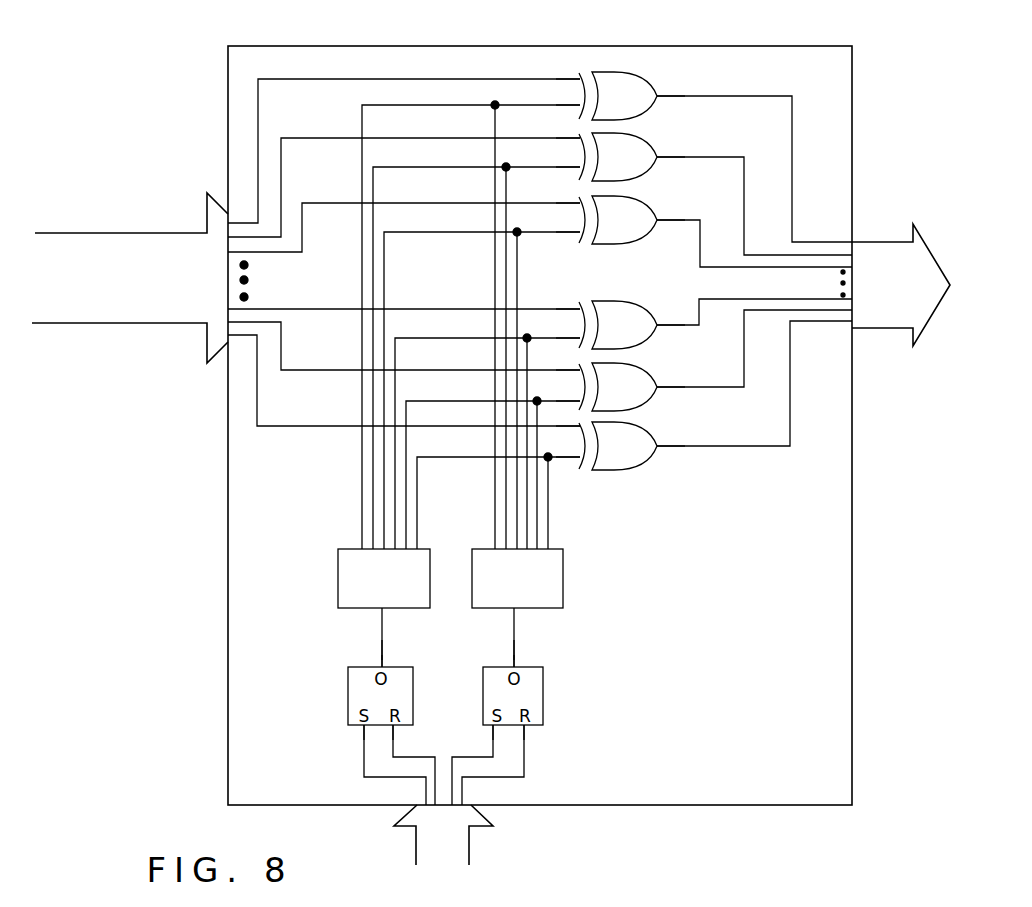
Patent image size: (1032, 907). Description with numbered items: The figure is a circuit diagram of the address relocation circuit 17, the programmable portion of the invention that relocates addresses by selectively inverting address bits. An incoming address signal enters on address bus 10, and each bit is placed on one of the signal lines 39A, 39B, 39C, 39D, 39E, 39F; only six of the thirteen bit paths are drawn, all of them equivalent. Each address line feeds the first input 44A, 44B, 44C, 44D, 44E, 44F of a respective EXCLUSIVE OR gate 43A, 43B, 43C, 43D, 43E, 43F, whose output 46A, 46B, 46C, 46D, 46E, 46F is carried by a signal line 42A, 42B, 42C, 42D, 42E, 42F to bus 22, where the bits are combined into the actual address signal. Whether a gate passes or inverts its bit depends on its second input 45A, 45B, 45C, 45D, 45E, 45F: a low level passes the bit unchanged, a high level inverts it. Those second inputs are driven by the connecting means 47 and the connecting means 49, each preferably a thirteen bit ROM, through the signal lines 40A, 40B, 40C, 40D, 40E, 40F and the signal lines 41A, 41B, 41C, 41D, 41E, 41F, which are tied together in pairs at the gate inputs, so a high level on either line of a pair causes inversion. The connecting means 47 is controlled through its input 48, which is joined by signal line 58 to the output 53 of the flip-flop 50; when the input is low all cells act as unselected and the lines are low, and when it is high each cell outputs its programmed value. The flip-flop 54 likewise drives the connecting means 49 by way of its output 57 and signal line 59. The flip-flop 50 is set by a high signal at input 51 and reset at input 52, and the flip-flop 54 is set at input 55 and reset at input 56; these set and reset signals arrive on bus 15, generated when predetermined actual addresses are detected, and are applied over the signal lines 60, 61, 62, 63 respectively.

The address bus 10 is at (118, 233).
The bus 15 is at (470, 858).
The address relocation circuit 17 is at (603, 46).
The bus 22 is at (872, 242).
The signal line 39A is at (325, 79).
The signal line 39B is at (333, 138).
The signal line 39C is at (352, 203).
The signal line 39D is at (342, 309).
The signal line 39E is at (338, 370).
The signal line 39F is at (322, 426).
The signal line 40A is at (366, 130).
The signal line 40B is at (376, 195).
The signal line 40C is at (388, 270).
The signal line 40D is at (397, 360).
The signal line 40E is at (407, 396).
The signal line 40F is at (418, 500).
The signal line 41A is at (494, 115).
The signal line 41B is at (507, 192).
The signal line 41C is at (518, 266).
The signal line 41D is at (528, 345).
The signal line 41E is at (538, 408).
The signal line 41F is at (549, 522).
The signal line 42A is at (740, 93).
The signal line 42B is at (738, 157).
The signal line 42C is at (703, 230).
The signal line 42D is at (702, 308).
The signal line 42E is at (744, 388).
The signal line 42F is at (784, 446).
The EXCLUSIVE OR gate 43A is at (648, 80).
The EXCLUSIVE OR gate 43B is at (650, 147).
The EXCLUSIVE OR gate 43C is at (650, 211).
The EXCLUSIVE OR gate 43D is at (650, 313).
The EXCLUSIVE OR gate 43E is at (658, 378).
The EXCLUSIVE OR gate 43F is at (658, 437).
The input 44A is at (578, 78).
The input 44B is at (578, 137).
The input 44C is at (576, 203).
The input 44D is at (578, 309).
The input 44E is at (581, 373).
The input 44F is at (581, 428).
The input 45A is at (578, 104).
The input 45B is at (578, 166).
The input 45C is at (576, 236).
The input 45D is at (578, 337).
The input 45E is at (580, 402).
The input 45F is at (579, 460).
The output 46A is at (660, 98).
The output 46B is at (660, 159).
The output 46C is at (650, 228).
The output 46D is at (652, 333).
The output 46E is at (660, 392).
The output 46F is at (656, 452).
The connecting means 47 is at (338, 580).
The input 48 is at (381, 612).
The connecting means 49 is at (563, 584).
The flip-flop 50 is at (515, 612).
The input 51 is at (363, 730).
The input 52 is at (394, 730).
The output 53 is at (380, 665).
The flip-flop 54 is at (543, 701).
The input 55 is at (494, 730).
The input 56 is at (525, 730).
The output 57 is at (516, 668).
The signal line 58 is at (384, 650).
The signal line 59 is at (512, 650).
The signal line 60 is at (398, 778).
The signal line 61 is at (434, 750).
The signal line 62 is at (453, 750).
The signal line 63 is at (494, 778).